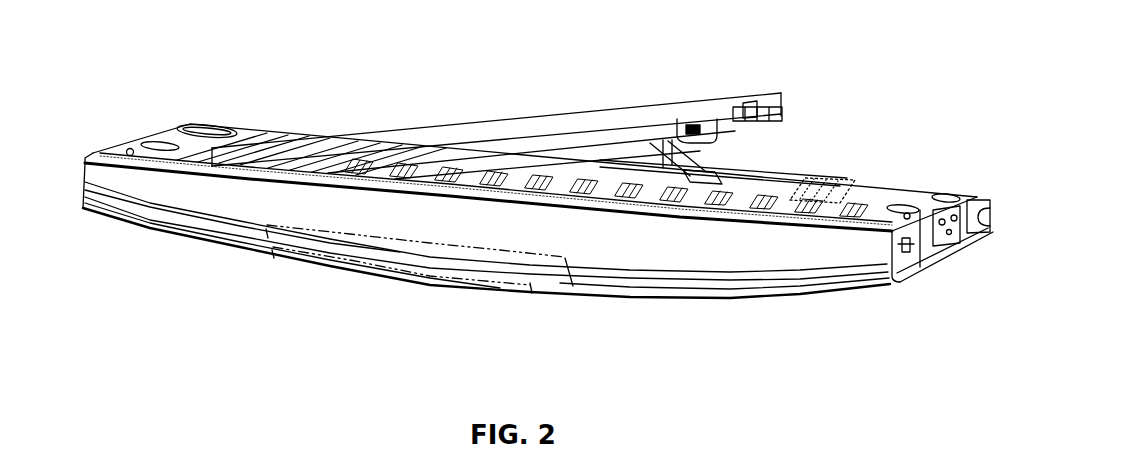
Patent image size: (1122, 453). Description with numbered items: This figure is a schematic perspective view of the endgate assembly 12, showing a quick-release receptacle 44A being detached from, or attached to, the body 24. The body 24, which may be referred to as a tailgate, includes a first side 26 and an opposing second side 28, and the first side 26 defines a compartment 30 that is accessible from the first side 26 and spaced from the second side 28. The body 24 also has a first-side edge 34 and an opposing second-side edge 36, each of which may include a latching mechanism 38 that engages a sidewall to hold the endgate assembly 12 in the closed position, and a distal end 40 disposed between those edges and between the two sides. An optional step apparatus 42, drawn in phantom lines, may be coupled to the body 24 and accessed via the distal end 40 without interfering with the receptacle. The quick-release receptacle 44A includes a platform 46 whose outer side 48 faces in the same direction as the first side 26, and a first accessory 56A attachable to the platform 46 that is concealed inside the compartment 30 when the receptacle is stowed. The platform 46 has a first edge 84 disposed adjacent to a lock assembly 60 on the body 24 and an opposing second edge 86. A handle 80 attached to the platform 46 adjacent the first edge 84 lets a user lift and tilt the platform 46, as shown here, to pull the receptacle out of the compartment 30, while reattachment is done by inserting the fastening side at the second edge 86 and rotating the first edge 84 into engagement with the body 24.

The endgate assembly 12 is at (850, 103).
The body 24 is at (903, 278).
The first side 26 is at (265, 130).
The second side 28 is at (167, 235).
The compartment 30 is at (684, 183).
The first-side edge 34 is at (975, 238).
The second-side edge 36 is at (143, 138).
The latching mechanism 38 is at (920, 262).
The distal end 40 is at (718, 277).
The step apparatus 42 is at (532, 293).
The quick-release receptacle 44A is at (543, 112).
The platform 46 is at (496, 120).
The outer side 48 is at (530, 126).
The first accessory 56A is at (720, 138).
The lock assembly 60 is at (840, 177).
The handle 80 is at (782, 108).
The first edge 84 is at (748, 102).
The second edge 86 is at (330, 130).